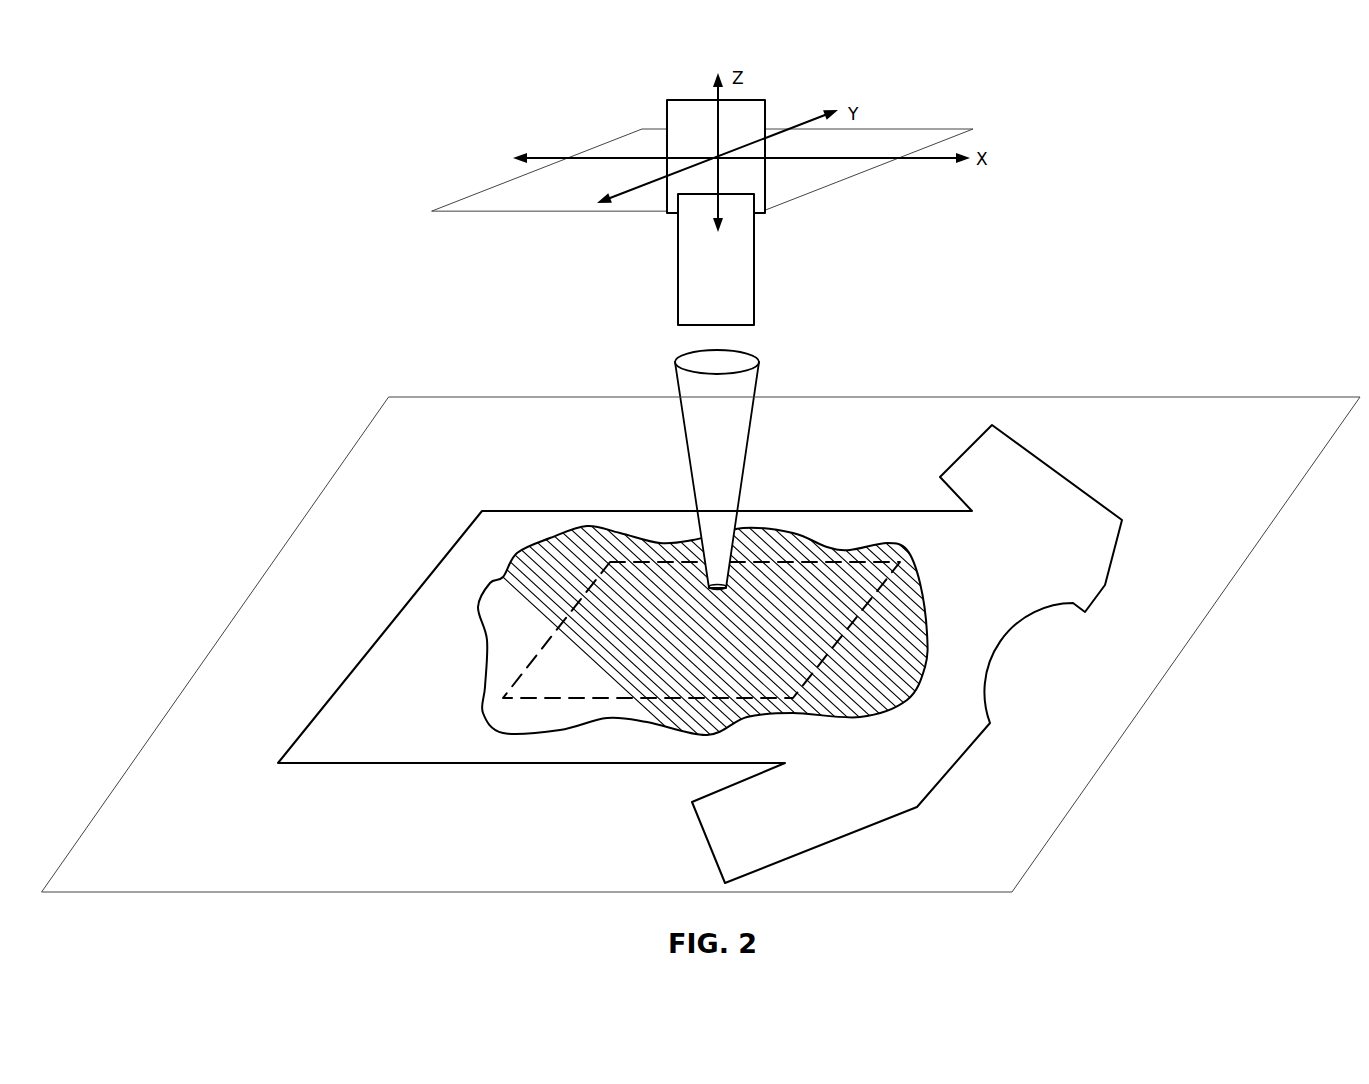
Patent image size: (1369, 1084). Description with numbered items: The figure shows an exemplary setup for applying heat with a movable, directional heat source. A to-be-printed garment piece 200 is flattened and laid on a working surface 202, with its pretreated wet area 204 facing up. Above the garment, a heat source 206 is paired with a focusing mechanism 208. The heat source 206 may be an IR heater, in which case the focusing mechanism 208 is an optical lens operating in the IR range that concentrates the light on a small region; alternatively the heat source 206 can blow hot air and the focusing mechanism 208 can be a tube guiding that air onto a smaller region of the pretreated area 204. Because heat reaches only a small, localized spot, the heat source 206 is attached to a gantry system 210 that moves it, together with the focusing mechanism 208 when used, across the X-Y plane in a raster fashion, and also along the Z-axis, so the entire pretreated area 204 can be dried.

The garment piece 200 is at (382, 764).
The working surface 202 is at (436, 422).
The pretreated wet area 204 is at (925, 607).
The heat source 206 is at (755, 268).
The focusing mechanism 208 is at (760, 362).
The gantry system 210 is at (612, 145).